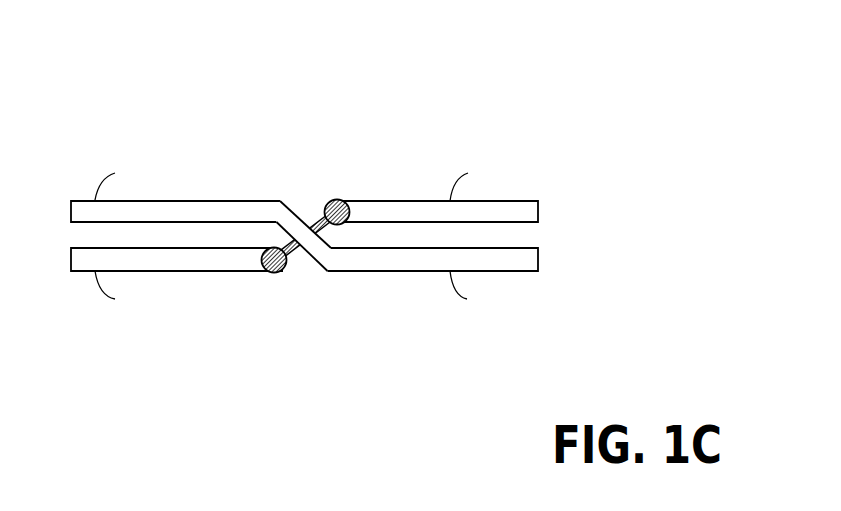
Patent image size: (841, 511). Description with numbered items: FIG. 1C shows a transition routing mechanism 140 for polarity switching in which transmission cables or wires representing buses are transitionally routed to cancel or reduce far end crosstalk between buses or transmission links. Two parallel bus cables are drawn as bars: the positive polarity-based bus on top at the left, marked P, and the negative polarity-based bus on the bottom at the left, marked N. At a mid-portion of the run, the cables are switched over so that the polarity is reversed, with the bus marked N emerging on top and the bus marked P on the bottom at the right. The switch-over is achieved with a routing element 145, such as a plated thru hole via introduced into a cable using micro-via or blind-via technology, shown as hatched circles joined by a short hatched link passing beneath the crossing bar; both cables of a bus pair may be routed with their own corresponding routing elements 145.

The transition routing mechanism 140 is at (371, 176).
The routing element 145 is at (328, 200).
The positive terminal busbar P is at (162, 211).
The negative terminal busbar N is at (163, 260).